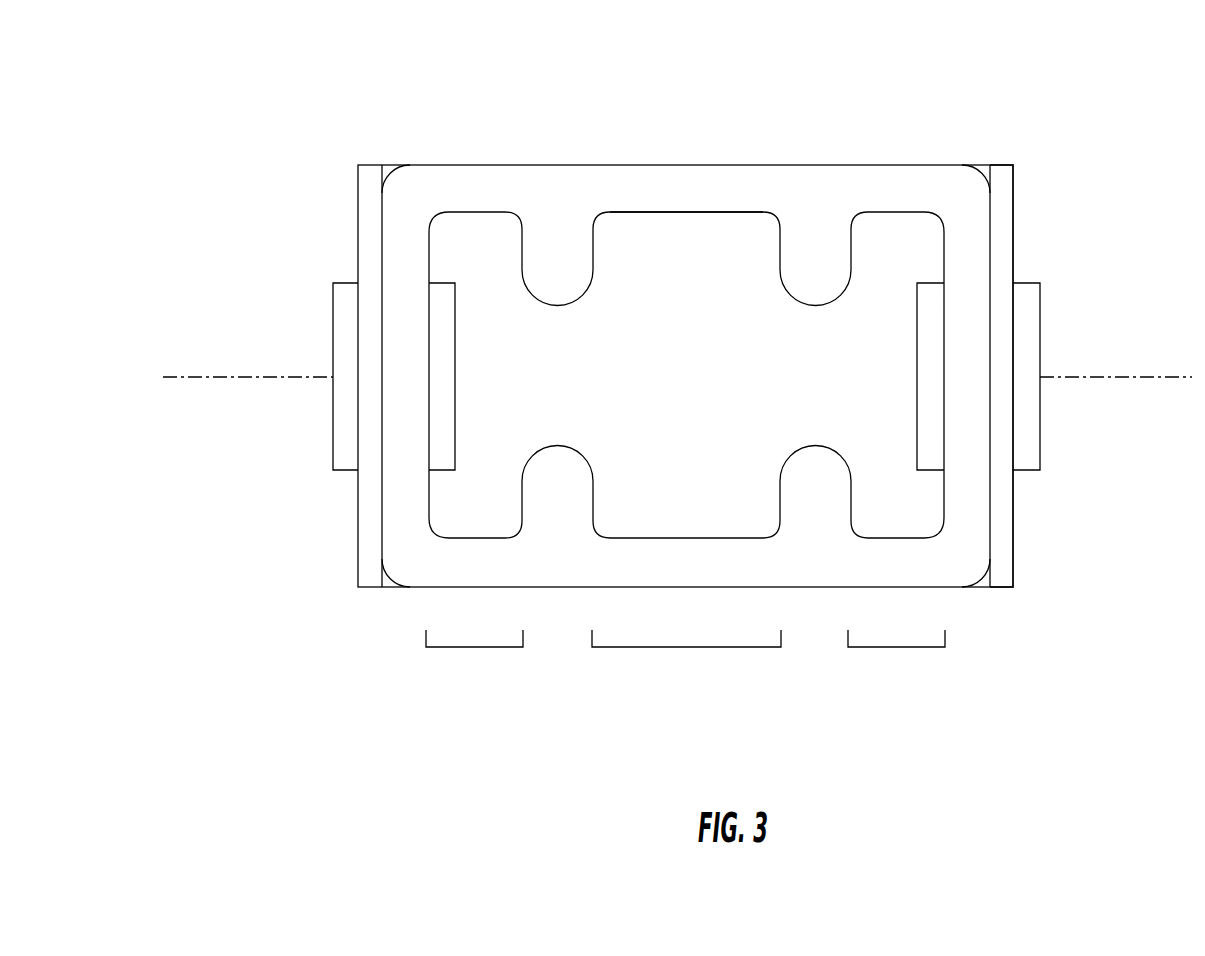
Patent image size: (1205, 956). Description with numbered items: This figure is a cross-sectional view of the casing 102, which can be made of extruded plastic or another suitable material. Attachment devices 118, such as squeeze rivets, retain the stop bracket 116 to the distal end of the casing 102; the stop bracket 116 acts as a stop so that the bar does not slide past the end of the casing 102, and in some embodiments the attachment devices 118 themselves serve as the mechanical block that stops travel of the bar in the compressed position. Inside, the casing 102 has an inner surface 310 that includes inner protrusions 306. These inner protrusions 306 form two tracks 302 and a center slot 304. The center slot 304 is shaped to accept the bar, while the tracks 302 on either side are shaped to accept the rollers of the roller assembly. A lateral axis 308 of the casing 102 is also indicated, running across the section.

The casing 102 is at (490, 180).
The inner protrusions 306 is at (778, 311).
The inner surface 310 is at (637, 219).
The stop bracket 116 is at (1010, 183).
The attachment devices 118 is at (1030, 303).
The lateral axis 308 is at (228, 377).
The tracks 302 is at (475, 647).
The center slot 304 is at (686, 647).